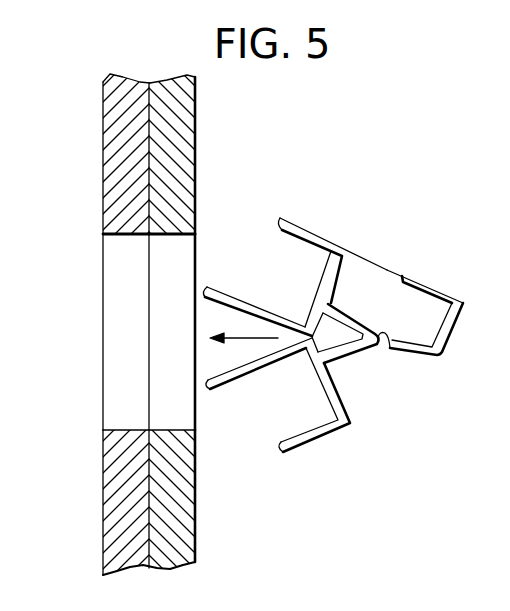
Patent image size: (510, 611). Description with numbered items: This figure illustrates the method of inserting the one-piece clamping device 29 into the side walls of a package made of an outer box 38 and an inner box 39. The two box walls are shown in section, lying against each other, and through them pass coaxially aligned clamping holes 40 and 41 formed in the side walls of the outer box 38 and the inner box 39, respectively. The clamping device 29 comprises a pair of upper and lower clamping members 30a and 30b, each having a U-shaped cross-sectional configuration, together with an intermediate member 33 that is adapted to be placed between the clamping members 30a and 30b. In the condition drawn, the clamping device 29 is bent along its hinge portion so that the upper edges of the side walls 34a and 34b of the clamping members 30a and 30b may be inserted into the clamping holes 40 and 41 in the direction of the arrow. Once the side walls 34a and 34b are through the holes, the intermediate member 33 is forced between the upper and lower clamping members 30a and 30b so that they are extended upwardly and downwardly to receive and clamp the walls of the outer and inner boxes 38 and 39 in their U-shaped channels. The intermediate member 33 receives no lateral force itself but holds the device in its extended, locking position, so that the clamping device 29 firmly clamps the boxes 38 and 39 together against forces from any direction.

The one-piece clamping device 29 is at (442, 391).
The upper clamping member 30a is at (310, 234).
The lower clamping member 30b is at (290, 447).
The intermediate member 33 is at (380, 288).
The side wall of the upper clamping member 34a is at (284, 312).
The side wall of the lower clamping member 34b is at (260, 368).
The outer box 38 is at (173, 137).
The inner box 39 is at (118, 139).
The clamping hole 40 is at (176, 263).
The clamping hole 41 is at (118, 270).